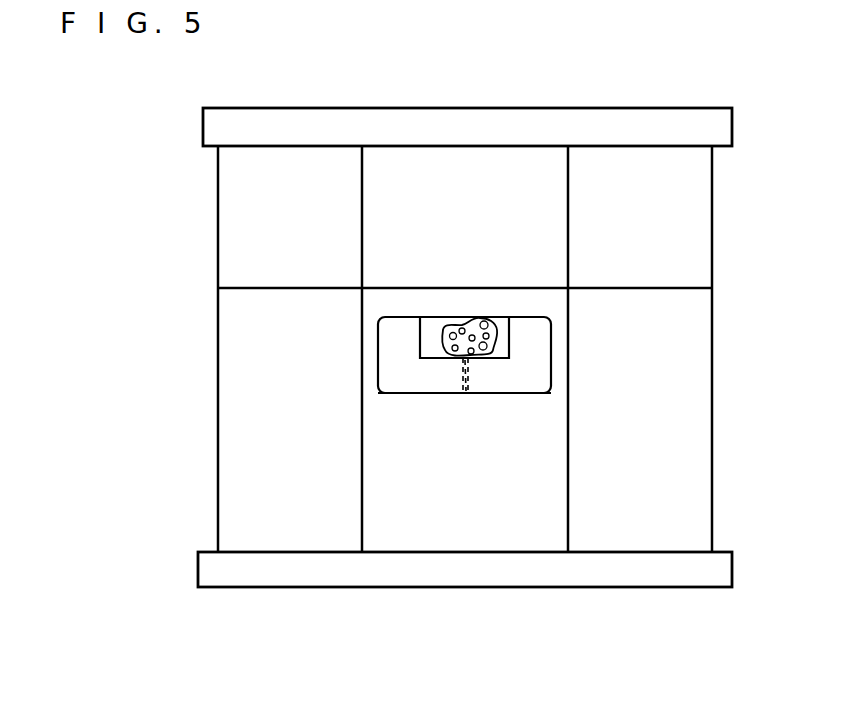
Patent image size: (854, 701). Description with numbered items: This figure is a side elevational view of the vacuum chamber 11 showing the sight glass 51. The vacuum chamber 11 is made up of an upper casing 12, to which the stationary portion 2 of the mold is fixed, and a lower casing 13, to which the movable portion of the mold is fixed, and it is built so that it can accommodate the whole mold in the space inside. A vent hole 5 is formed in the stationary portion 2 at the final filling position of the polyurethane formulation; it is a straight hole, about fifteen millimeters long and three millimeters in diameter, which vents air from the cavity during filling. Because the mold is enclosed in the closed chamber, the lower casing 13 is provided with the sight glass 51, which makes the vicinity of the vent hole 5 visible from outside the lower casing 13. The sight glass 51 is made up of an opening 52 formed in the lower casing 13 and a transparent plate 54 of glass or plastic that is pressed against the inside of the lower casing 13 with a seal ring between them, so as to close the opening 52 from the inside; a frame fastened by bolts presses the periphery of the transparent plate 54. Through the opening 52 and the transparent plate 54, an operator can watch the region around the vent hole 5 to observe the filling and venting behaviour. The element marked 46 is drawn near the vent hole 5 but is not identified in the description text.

The vacuum chamber 11 is at (153, 236).
The upper casing 12 is at (228, 256).
The lower casing 13 is at (233, 330).
The stationary portion 2 is at (540, 363).
The sight glass 51 is at (404, 336).
The opening 52 is at (410, 382).
The transparent plate 54 is at (445, 382).
The vent hole 5 is at (467, 372).
The material mass 46 is at (475, 330).